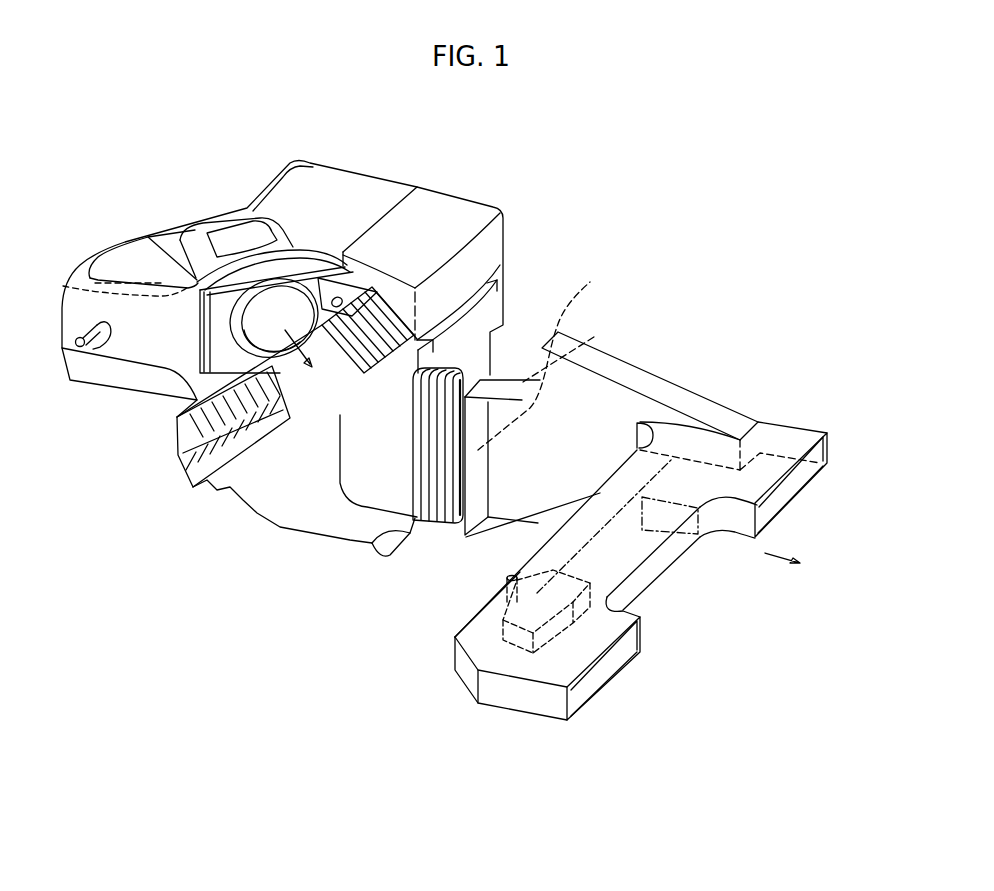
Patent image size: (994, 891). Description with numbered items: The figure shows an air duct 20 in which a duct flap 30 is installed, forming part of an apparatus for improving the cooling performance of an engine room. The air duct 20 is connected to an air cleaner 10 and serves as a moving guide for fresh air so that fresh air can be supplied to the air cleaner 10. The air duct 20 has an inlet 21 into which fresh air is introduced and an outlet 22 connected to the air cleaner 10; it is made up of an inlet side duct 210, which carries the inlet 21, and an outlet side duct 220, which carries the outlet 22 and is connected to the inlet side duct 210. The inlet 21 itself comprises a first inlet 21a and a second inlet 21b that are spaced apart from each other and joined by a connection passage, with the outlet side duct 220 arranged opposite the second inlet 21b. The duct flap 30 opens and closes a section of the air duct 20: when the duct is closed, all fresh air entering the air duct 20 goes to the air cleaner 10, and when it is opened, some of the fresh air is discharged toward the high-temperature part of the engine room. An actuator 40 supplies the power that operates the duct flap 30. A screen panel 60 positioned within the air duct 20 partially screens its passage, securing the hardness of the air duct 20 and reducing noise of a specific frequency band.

The air cleaner 10 is at (358, 190).
The air duct 20 is at (784, 412).
The inlet 21 is at (645, 657).
The first inlet 21a is at (593, 697).
The second inlet 21b is at (788, 490).
The outlet 22 is at (546, 354).
The duct flap 30 is at (480, 626).
The actuator 40 is at (532, 630).
The screen panel 60 is at (680, 537).
The inlet side duct 210 is at (643, 580).
The outlet side duct 220 is at (645, 376).